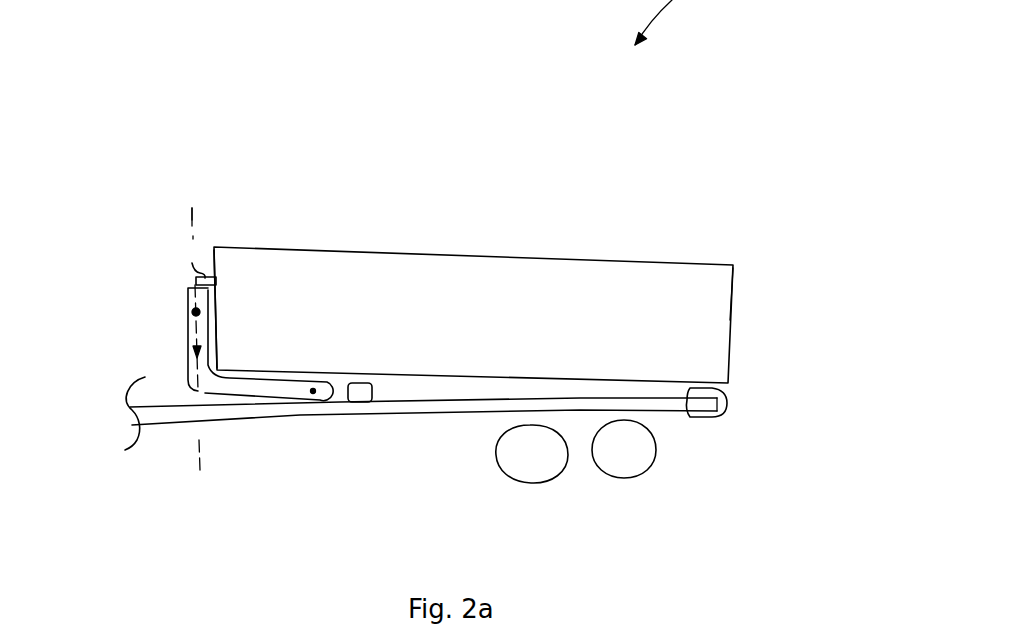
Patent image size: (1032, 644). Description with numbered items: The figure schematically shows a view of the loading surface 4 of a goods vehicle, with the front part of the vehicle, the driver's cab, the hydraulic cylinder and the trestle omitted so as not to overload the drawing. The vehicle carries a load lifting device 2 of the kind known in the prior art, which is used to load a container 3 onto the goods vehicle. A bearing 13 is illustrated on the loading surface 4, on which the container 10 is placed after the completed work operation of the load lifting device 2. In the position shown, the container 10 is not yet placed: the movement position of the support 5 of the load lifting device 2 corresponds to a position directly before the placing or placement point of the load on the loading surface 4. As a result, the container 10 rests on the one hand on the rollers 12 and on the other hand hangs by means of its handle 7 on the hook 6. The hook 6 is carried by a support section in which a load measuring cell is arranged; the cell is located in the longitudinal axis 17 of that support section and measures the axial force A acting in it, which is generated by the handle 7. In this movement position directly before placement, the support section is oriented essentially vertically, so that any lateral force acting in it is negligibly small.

The load lifting device 2 is at (320, 450).
The container 3 is at (222, 322).
The loading surface 4 is at (183, 344).
The support 5 is at (212, 385).
The hook 6 is at (193, 267).
The handle 7 is at (193, 278).
The container 10 is at (546, 320).
The rollers 12 is at (712, 418).
The bearing 13 is at (360, 390).
The longitudinal axis 17 is at (195, 225).
The axial force A is at (203, 337).